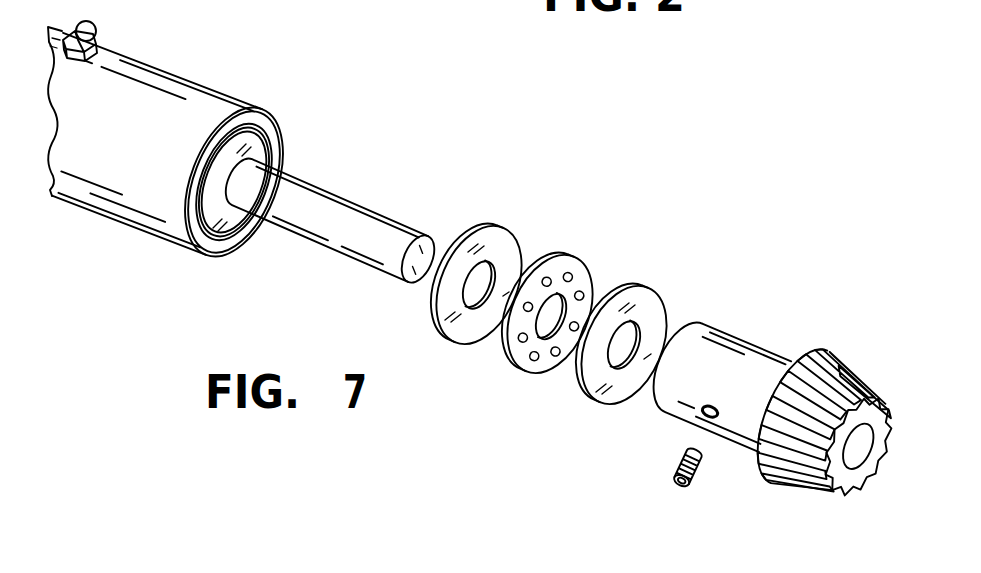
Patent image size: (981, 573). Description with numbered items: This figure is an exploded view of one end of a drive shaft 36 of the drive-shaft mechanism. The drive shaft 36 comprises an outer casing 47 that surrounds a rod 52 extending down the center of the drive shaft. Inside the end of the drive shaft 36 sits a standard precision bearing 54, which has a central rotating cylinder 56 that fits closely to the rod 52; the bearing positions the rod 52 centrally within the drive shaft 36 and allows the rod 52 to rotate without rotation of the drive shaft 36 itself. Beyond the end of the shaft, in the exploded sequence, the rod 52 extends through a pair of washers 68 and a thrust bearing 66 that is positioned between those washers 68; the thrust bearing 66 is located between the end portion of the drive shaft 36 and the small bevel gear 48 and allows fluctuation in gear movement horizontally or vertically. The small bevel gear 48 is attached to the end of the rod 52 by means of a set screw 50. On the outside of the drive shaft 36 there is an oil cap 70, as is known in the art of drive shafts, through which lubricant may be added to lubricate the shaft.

The drive shaft 36 is at (201, 106).
The oil cap 70 is at (96, 28).
The outer casing 47 is at (258, 116).
The central rotating cylinder 56 is at (266, 153).
The precision bearing 54 is at (233, 240).
The rod 52 is at (354, 214).
The washers 68 is at (503, 243).
The thrust bearing 66 is at (582, 277).
The small bevel gear 48 is at (847, 360).
The set screw 50 is at (678, 462).